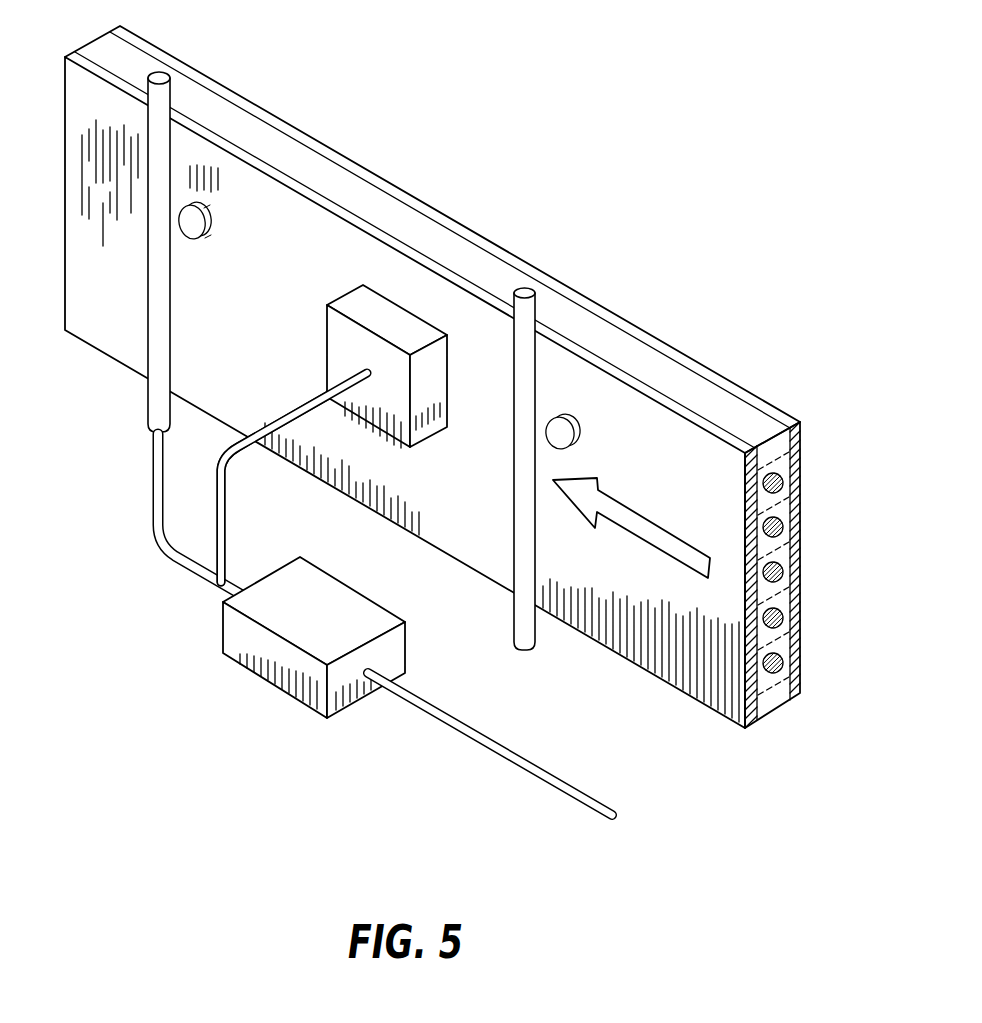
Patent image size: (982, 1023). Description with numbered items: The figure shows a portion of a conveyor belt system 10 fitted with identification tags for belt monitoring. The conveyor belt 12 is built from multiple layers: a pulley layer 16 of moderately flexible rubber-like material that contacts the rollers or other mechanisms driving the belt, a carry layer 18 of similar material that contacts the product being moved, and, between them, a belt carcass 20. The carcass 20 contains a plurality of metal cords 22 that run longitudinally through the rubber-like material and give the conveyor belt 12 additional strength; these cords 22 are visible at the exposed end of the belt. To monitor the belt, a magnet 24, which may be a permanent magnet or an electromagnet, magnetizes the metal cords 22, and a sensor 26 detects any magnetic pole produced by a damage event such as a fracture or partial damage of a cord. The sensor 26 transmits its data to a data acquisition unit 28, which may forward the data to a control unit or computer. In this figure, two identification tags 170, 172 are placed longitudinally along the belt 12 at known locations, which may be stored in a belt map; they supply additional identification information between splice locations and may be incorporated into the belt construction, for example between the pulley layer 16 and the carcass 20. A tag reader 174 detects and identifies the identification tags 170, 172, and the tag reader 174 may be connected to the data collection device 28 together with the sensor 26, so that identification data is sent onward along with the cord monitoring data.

The conveyor belt system 10 is at (600, 102).
The conveyor belt 12 is at (606, 308).
The pulley layer 16 is at (715, 430).
The carry layer 18 is at (672, 350).
The belt carcass 20 is at (690, 380).
The metal cords 22 is at (786, 488).
The magnet 24 is at (528, 288).
The sensor 26 is at (161, 76).
The data acquisition unit 28 is at (323, 572).
The identification tag 170 is at (218, 216).
The identification tag 172 is at (578, 430).
The tag reader 174 is at (327, 337).